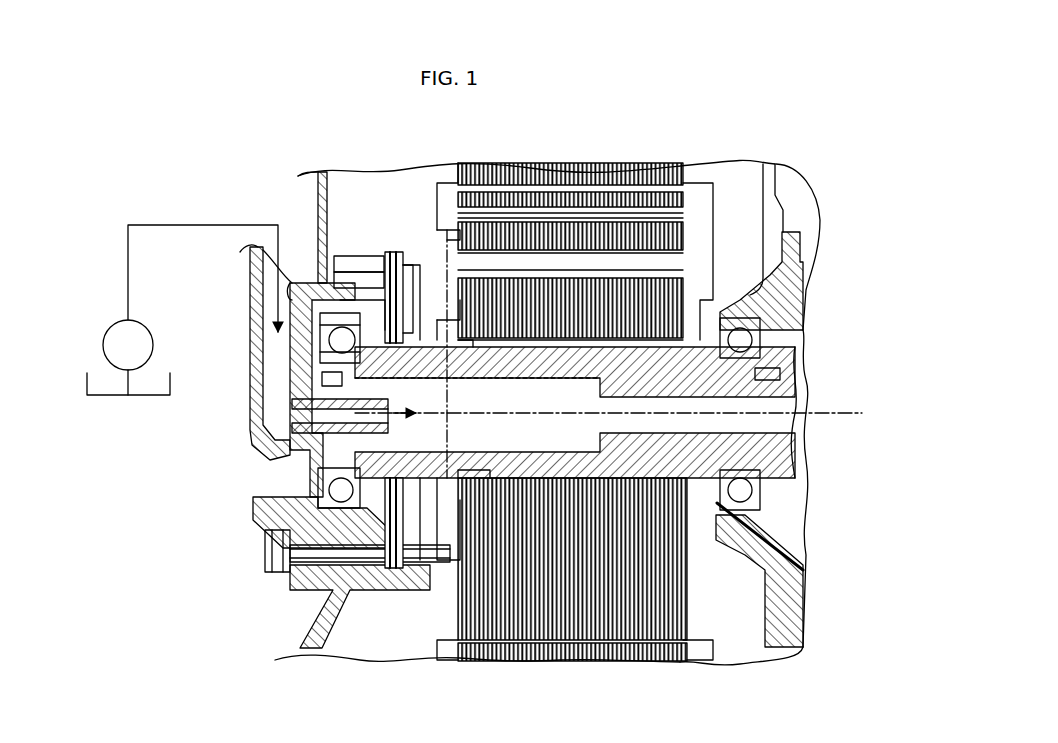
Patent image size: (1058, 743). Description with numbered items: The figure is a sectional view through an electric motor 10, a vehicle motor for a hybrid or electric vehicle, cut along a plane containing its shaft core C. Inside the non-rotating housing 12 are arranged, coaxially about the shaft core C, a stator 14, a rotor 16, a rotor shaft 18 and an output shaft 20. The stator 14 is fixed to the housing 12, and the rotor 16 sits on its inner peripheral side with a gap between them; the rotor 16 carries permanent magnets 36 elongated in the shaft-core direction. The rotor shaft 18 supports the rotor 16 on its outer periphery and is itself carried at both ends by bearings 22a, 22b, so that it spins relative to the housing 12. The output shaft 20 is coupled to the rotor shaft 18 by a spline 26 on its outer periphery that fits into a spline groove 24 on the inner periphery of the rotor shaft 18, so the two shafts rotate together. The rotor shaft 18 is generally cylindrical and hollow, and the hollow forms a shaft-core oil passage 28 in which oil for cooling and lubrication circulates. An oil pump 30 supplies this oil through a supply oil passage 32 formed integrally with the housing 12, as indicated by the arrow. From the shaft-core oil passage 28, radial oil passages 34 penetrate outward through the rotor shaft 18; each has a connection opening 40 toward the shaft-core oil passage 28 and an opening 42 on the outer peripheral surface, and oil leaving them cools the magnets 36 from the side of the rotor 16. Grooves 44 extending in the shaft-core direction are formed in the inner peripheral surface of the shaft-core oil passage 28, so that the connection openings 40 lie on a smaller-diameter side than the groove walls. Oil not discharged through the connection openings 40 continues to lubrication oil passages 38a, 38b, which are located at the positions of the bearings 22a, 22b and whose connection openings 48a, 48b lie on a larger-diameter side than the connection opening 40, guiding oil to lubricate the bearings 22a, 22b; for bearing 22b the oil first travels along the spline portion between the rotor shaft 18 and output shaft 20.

The electric motor 10 is at (733, 124).
The housing 12 is at (312, 177).
The stator 14 is at (458, 170).
The rotor 16 is at (683, 296).
The rotor shaft 18 is at (438, 560).
The output shaft 20 is at (760, 452).
The bearing 22a is at (305, 476).
The bearing 22b is at (768, 305).
The spline groove 24 is at (762, 490).
The spline 26 is at (600, 395).
The shaft-core oil passage 28 is at (522, 440).
The oil pump 30 is at (112, 326).
The supply oil passage 32 is at (262, 342).
The radial oil passage 34 is at (446, 379).
The magnet 36 is at (683, 212).
The lubrication oil passage 38a is at (342, 326).
The lubrication oil passage 38b is at (762, 340).
The connection opening 40 is at (449, 378).
The opening 42 is at (473, 342).
The groove 44 is at (410, 320).
The connection opening 48a is at (320, 374).
The connection opening 48b is at (762, 380).
The shaft core C is at (617, 414).